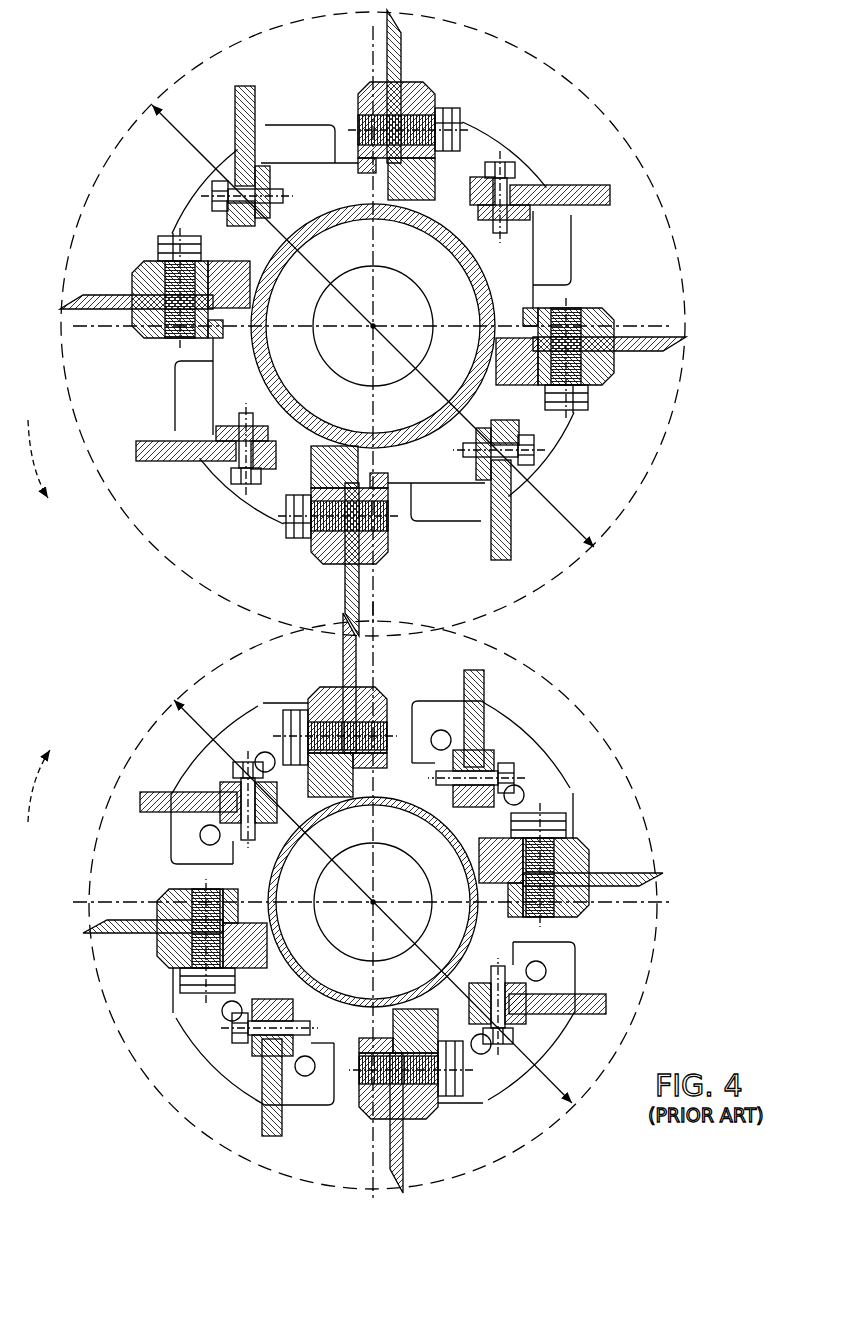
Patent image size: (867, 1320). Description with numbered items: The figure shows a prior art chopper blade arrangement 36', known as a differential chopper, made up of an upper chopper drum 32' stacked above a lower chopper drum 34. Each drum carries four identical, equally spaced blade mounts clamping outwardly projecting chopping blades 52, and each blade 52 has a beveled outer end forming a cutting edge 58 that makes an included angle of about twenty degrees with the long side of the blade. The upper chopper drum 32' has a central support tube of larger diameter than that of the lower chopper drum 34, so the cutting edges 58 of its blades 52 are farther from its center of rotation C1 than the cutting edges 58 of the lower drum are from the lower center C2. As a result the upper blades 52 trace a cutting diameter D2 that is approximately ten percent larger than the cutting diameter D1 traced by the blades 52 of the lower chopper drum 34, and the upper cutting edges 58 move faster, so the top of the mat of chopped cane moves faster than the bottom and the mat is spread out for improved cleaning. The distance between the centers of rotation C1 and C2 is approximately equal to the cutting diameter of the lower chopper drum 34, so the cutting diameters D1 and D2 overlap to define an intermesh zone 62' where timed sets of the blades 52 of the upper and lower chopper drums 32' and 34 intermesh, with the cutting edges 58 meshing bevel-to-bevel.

The upper chopper drum 32' is at (373, 326).
The lower chopper drum 34 is at (534, 730).
The prior art chopper blade arrangement 36' is at (381, 600).
The chopping blade 52 is at (382, 55).
The cutting edge 58 is at (397, 23).
The intermesh zone 62' is at (495, 627).
The cutting diameter D1 is at (185, 700).
The cutting diameter D2 is at (168, 100).
The center of rotation C1 is at (374, 326).
The center C2 is at (374, 902).